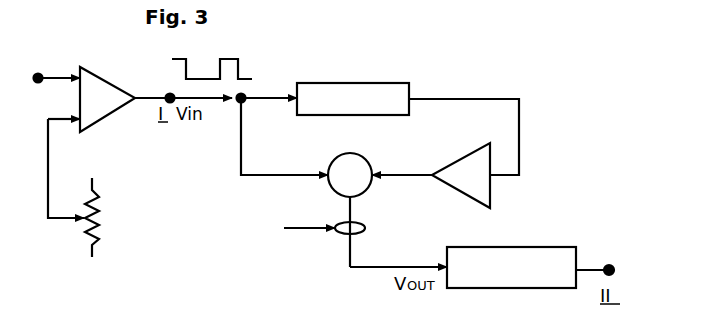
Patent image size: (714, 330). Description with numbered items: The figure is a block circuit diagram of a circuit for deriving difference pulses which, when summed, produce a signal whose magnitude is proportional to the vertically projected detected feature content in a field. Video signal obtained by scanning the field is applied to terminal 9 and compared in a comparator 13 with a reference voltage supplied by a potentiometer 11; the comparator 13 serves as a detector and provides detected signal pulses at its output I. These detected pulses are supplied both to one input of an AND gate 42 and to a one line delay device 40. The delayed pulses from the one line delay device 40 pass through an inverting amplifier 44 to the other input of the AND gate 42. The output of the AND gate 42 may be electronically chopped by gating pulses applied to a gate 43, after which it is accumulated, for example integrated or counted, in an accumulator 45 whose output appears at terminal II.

The terminal 9 is at (41, 73).
The comparator 13 is at (117, 84).
The potentiometer 11 is at (100, 231).
The one line delay device 40 is at (380, 83).
The AND gate 42 is at (368, 162).
The inverting amplifier 44 is at (490, 196).
The gate 43 is at (363, 226).
The accumulator 45 is at (548, 247).